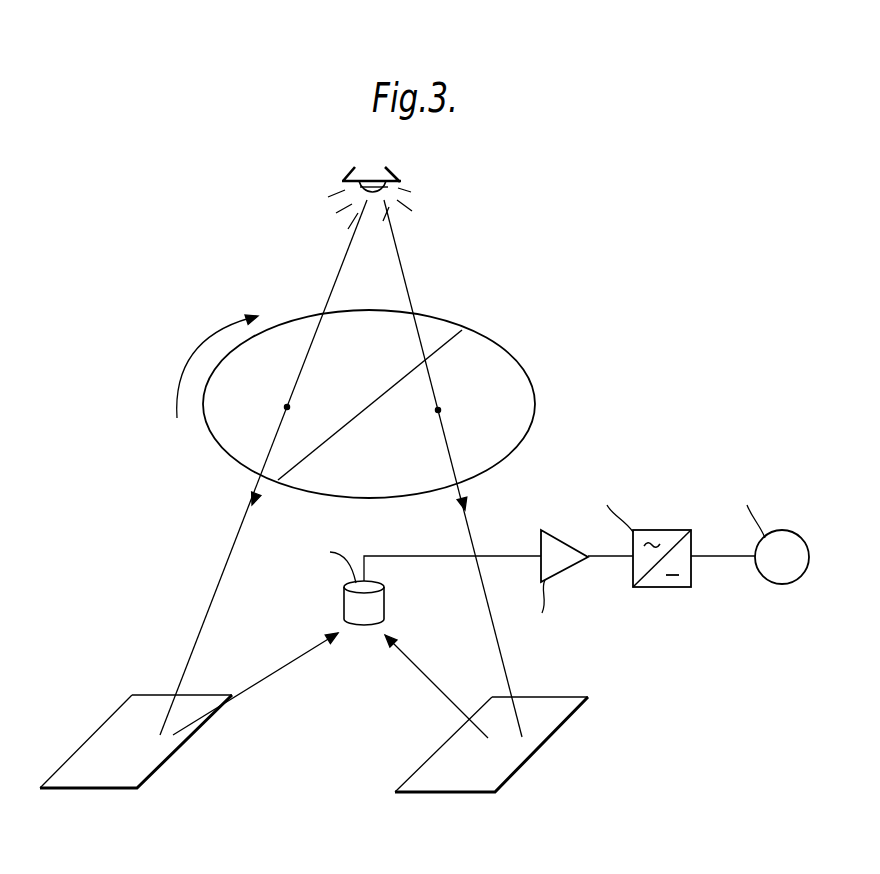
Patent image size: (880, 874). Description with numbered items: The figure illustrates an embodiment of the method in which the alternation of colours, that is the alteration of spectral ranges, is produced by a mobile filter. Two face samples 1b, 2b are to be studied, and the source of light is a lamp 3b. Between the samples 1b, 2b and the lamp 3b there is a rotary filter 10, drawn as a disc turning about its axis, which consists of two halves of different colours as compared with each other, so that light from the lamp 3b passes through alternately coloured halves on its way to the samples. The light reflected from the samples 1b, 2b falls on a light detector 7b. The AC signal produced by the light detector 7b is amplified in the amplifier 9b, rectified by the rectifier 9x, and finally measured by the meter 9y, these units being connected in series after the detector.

The lamp 3b is at (383, 188).
The rotary filter 10 is at (520, 427).
The light detector 7b is at (372, 602).
The amplifier 9b is at (553, 567).
The rectifier 9x is at (672, 587).
The meter 9y is at (778, 583).
The face sample 1b is at (95, 778).
The face sample 2b is at (457, 783).